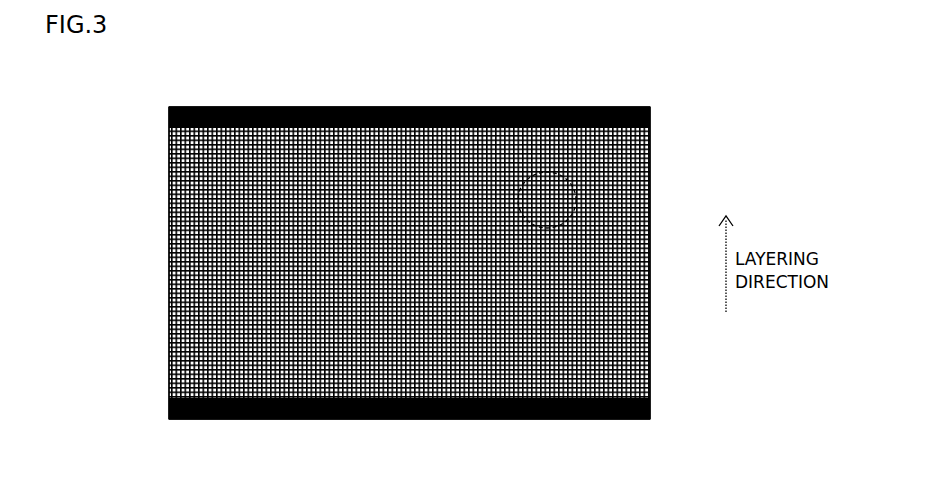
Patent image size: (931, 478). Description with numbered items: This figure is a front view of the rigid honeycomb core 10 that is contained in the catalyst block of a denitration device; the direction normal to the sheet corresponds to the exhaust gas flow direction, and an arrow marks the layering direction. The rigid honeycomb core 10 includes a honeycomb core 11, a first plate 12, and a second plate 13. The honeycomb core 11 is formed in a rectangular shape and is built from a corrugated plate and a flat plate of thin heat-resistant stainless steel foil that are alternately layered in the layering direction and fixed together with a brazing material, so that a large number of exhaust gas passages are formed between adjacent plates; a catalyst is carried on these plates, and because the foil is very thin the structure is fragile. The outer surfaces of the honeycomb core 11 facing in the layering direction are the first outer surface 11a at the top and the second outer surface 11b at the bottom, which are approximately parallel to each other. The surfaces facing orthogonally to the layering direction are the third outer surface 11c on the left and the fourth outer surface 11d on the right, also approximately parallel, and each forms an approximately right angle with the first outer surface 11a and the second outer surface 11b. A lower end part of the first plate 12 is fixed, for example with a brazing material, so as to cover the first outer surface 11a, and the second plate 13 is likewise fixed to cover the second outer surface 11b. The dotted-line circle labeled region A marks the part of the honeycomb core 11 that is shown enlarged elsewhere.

The rigid honeycomb core 10 is at (666, 122).
The honeycomb core 11 is at (169, 267).
The first outer surface 11a is at (363, 107).
The second outer surface 11b is at (377, 419).
The third outer surface 11c is at (169, 205).
The fourth outer surface 11d is at (650, 352).
The first plate 12 is at (169, 111).
The second plate 13 is at (169, 402).
The region A is at (573, 190).